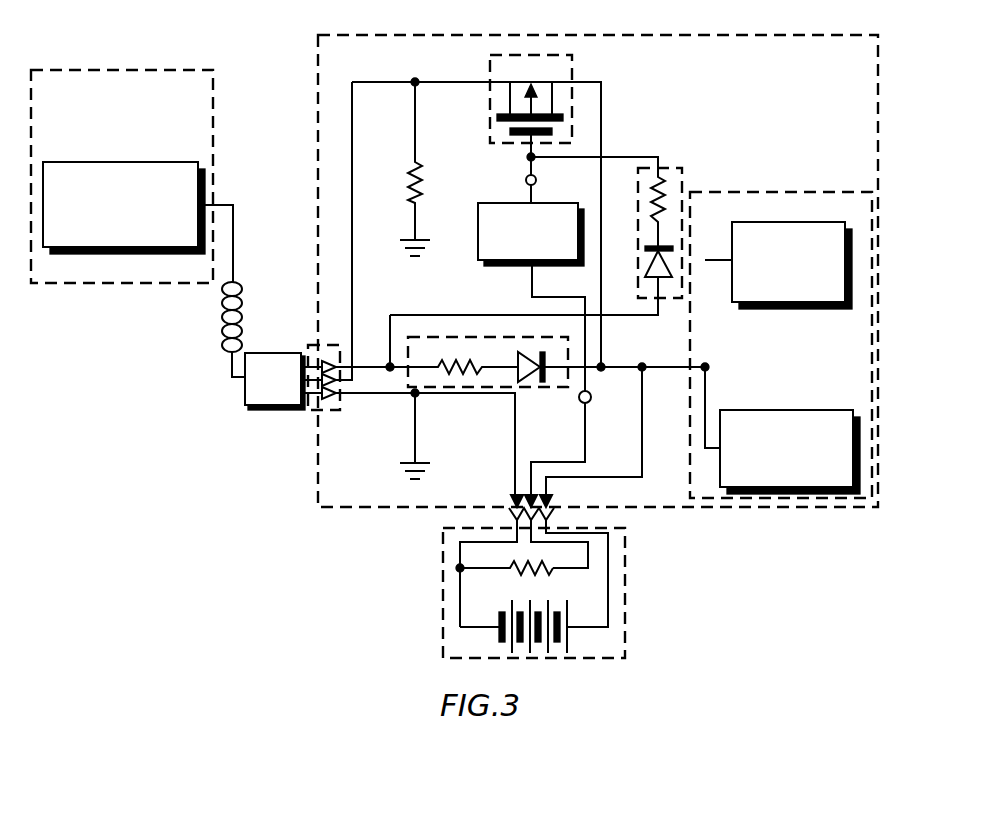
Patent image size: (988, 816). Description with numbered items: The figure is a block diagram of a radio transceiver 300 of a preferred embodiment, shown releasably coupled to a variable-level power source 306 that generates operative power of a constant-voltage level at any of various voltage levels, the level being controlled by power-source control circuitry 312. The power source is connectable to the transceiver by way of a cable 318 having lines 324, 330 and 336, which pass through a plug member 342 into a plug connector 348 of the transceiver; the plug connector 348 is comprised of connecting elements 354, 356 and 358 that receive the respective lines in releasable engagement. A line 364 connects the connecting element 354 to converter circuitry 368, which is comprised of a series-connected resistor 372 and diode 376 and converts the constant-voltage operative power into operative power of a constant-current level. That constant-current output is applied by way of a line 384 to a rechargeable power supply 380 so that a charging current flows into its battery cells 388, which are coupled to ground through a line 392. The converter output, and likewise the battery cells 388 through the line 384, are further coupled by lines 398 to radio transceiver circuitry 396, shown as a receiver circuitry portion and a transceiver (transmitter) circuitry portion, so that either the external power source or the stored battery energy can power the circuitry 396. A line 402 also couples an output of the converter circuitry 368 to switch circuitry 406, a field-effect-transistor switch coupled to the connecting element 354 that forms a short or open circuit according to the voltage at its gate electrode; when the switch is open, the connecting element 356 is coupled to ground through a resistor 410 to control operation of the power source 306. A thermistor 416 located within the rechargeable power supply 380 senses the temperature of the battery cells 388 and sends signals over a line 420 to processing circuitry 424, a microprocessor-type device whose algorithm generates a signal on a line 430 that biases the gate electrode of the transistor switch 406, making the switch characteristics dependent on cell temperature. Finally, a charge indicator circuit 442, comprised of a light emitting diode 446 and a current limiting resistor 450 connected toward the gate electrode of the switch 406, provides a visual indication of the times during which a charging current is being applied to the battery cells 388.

The radio transceiver 300 is at (825, 507).
The variable-level power source 306 is at (213, 112).
The power-source control circuitry 312 is at (157, 162).
The cable 318 is at (222, 322).
The line 324 is at (315, 365).
The line 330 is at (293, 410).
The line 336 is at (312, 413).
The plug member 342 is at (245, 392).
The plug connector 348 is at (315, 347).
The connecting element 354 is at (329, 358).
The connecting element 356 is at (340, 395).
The connecting element 358 is at (324, 407).
The line 364 is at (386, 362).
The converter circuitry 368 is at (489, 390).
The resistor 372 is at (445, 362).
The diode 376 is at (528, 375).
The rechargeable power supply 380 is at (533, 593).
The line 384 is at (556, 477).
The battery cells 388 is at (556, 627).
The line 392 is at (515, 405).
The radio transceiver circuitry 396 is at (780, 192).
The lines 398 is at (613, 367).
The line 402 is at (601, 95).
The switch circuitry 406 is at (572, 57).
The resistor 410 is at (425, 198).
The thermistor 416 is at (553, 567).
The line 420 is at (585, 440).
The processing circuitry 424 is at (538, 203).
The line 430 is at (527, 165).
The charge indicator circuit 442 is at (645, 248).
The light emitting diode 446 is at (672, 277).
The current limiting resistor 450 is at (626, 227).